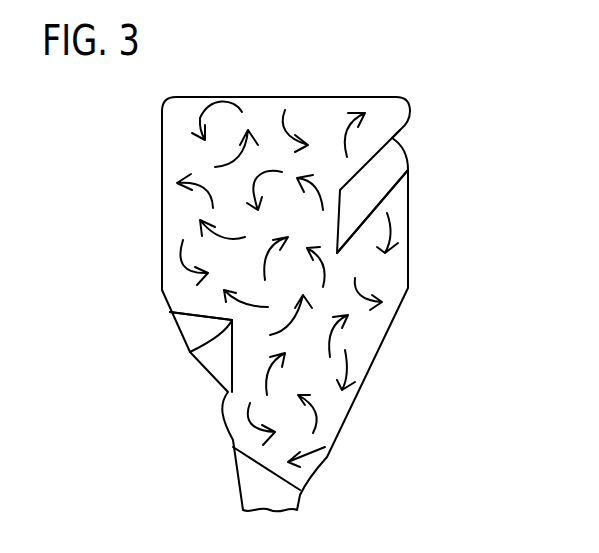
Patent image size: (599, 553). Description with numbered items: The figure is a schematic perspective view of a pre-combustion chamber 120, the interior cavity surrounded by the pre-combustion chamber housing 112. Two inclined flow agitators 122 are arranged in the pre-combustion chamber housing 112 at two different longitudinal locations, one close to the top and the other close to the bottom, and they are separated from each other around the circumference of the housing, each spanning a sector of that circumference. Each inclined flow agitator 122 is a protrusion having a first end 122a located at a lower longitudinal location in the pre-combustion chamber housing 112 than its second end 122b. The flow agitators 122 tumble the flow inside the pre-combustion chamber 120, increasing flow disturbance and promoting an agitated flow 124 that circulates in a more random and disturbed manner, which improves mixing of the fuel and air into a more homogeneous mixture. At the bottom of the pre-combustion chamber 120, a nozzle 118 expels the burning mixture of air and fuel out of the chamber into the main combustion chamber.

The pre-combustion chamber 120 is at (405, 71).
The pre-combustion chamber housing 112 is at (162, 127).
The agitated flow 124 is at (200, 196).
The inclined flow agitator 122 is at (376, 188).
The first end 122a is at (338, 254).
The second end 122b is at (170, 312).
The nozzle 118 is at (256, 481).